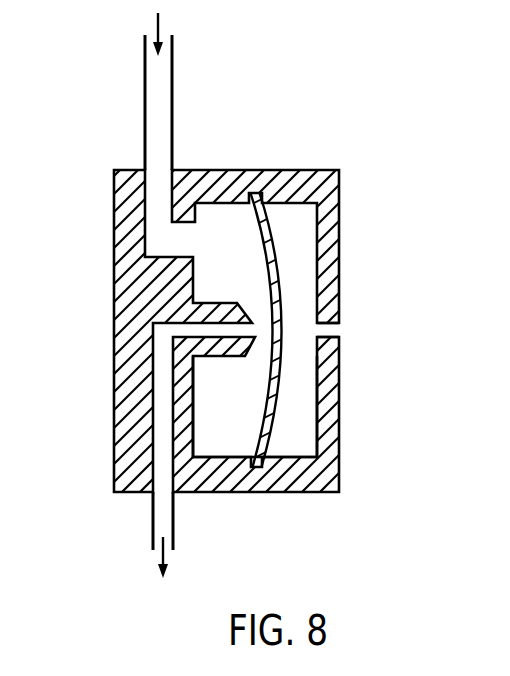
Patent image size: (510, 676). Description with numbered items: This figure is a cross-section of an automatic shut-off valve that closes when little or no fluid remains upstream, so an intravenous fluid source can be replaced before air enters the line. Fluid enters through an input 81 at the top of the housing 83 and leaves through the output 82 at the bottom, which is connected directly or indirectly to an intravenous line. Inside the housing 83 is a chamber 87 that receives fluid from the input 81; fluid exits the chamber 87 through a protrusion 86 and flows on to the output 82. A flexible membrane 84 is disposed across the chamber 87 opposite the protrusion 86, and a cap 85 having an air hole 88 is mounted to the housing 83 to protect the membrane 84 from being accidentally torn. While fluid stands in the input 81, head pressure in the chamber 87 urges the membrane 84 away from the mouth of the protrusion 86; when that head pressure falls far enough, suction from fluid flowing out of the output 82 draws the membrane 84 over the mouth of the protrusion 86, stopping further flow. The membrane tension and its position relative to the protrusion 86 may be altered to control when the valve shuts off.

The input 81 is at (175, 130).
The output 82 is at (178, 532).
The housing 83 is at (113, 223).
The flexible membrane 84 is at (278, 393).
The cap 85 is at (343, 463).
The protrusion 86 is at (243, 315).
The chamber 87 is at (233, 232).
The air hole 88 is at (340, 320).